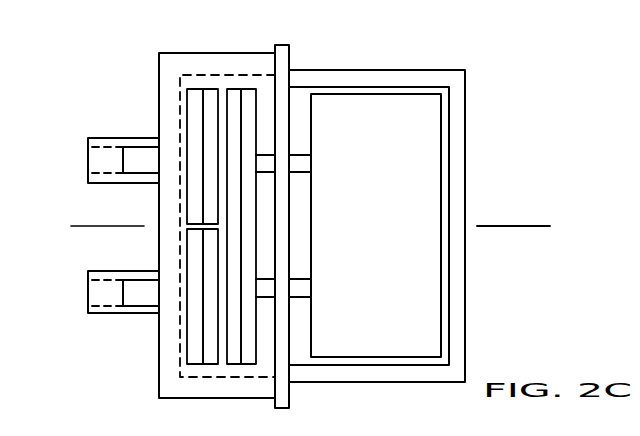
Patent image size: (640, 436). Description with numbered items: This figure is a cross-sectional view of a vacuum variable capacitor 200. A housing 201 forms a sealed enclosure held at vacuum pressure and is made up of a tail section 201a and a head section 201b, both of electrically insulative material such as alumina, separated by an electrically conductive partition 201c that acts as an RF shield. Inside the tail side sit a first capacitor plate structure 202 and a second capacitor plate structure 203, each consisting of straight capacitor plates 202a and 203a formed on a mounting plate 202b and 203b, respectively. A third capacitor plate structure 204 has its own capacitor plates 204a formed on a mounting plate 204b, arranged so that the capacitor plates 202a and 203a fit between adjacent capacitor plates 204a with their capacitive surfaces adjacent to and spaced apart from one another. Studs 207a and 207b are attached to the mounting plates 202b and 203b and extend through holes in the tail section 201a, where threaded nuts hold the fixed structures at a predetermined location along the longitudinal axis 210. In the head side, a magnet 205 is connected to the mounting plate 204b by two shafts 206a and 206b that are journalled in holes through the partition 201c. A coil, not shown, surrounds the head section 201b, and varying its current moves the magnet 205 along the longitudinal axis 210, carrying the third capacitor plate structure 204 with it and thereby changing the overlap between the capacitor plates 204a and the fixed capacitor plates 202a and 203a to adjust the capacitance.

The vacuum variable capacitor 200 is at (484, 199).
The housing 201 is at (482, 277).
The tail section 201a is at (168, 250).
The head section 201b is at (457, 340).
The partition 201c is at (283, 62).
The first capacitor plate structure 202 is at (193, 74).
The capacitor plates 202a is at (211, 117).
The mounting plate 202b is at (195, 203).
The second capacitor plate structure 203 is at (189, 377).
The capacitor plates 203a is at (207, 347).
The mounting plate 203b is at (193, 330).
The third capacitor plate structure 204 is at (254, 377).
The capacitor plates 204a is at (235, 97).
The mounting plate 204b is at (252, 349).
The magnet 205 is at (425, 247).
The shaft 206a is at (300, 160).
The shaft 206b is at (300, 292).
The stud 207a is at (133, 160).
The stud 207b is at (143, 297).
The longitudinal axis 210 is at (538, 226).